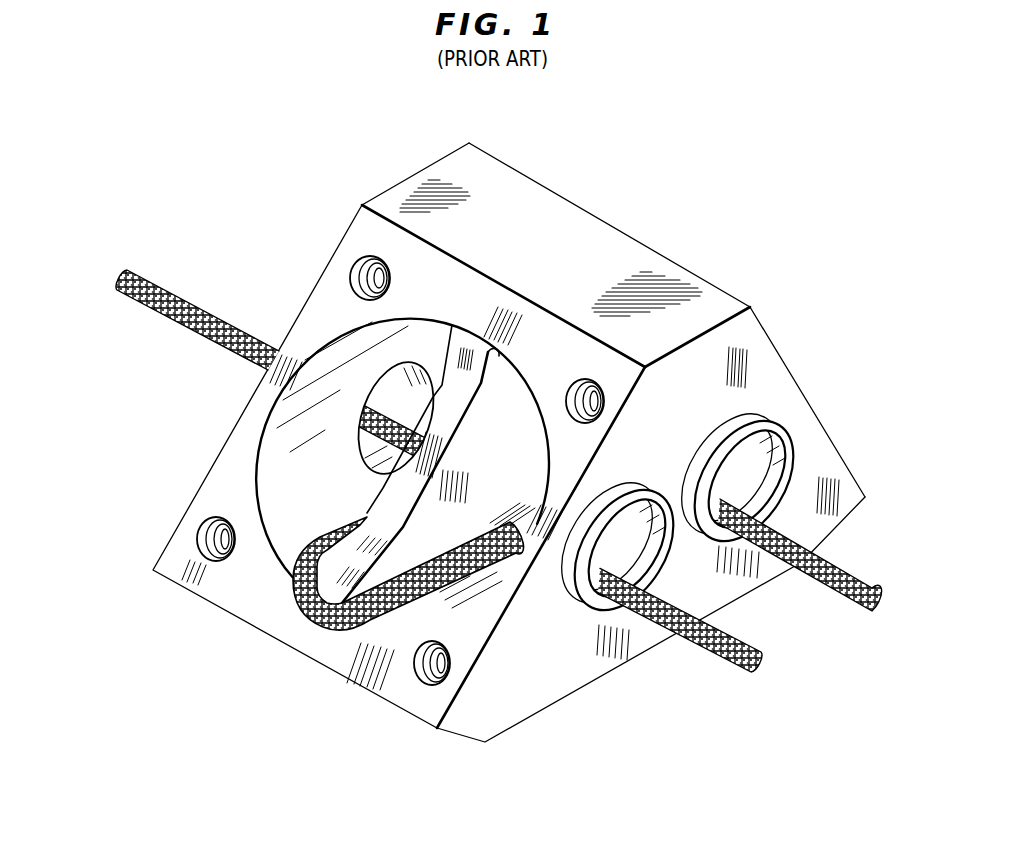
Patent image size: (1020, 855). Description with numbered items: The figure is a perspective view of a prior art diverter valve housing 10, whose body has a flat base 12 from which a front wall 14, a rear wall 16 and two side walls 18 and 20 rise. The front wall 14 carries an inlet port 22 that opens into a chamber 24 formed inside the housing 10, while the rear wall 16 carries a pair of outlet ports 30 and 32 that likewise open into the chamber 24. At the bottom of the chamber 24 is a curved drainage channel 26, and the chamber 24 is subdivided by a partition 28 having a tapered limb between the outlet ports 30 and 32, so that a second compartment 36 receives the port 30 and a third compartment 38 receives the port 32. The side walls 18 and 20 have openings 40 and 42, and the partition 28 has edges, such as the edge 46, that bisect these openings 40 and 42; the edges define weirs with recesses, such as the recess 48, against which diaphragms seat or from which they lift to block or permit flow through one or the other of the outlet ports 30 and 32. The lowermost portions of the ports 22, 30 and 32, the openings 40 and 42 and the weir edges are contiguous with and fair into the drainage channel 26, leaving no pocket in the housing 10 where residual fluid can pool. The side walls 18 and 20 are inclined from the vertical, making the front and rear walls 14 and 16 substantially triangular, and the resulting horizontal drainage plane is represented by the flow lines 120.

The diverter valve housing 10 is at (648, 265).
The flat base 12 is at (593, 681).
The front wall 14 is at (300, 313).
The rear wall 16 is at (780, 392).
The side wall 18 is at (423, 250).
The side wall 20 is at (537, 178).
The inlet port 22 is at (421, 363).
The chamber 24 is at (283, 448).
The curved drainage channel 26 is at (287, 550).
The partition 28 is at (480, 479).
The outlet port 30 is at (650, 520).
The outlet port 32 is at (722, 488).
The second compartment 36 is at (438, 538).
The third compartment 38 is at (807, 423).
The opening 40 is at (523, 388).
The opening 42 is at (777, 350).
The edge 46 is at (727, 288).
The recess 48 is at (392, 495).
The flow lines 120 is at (160, 282).